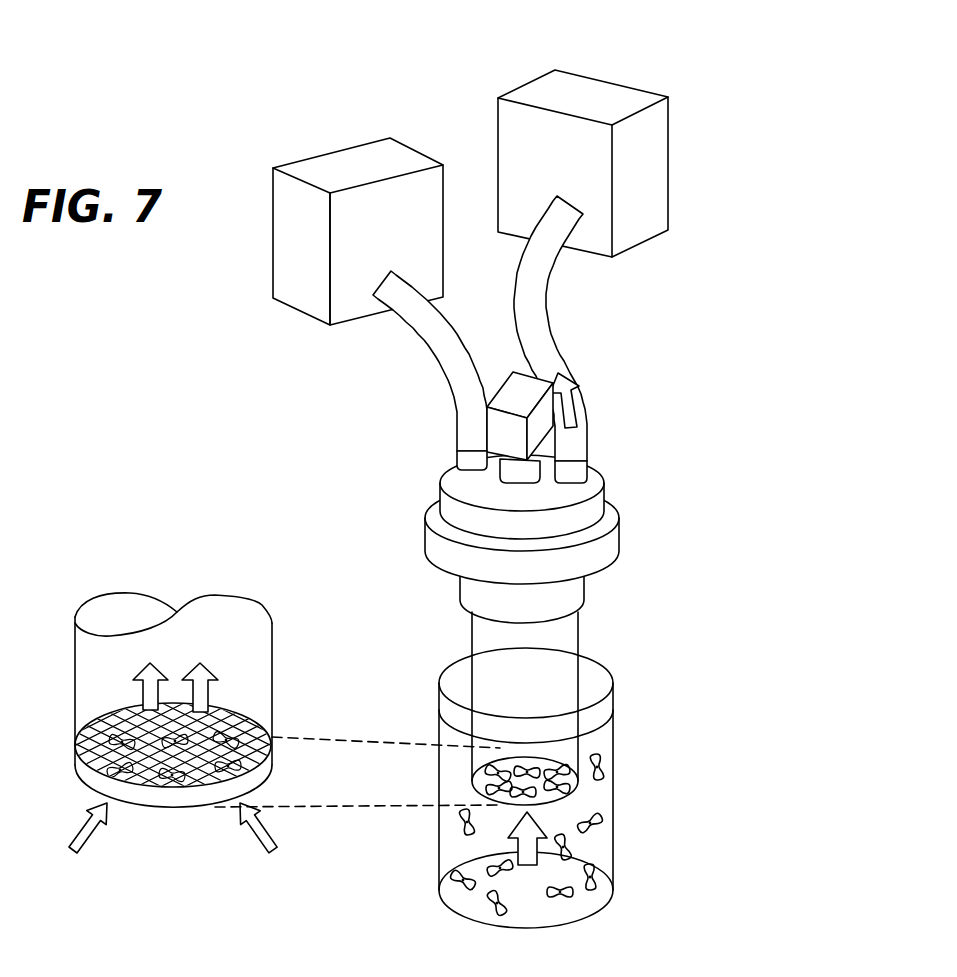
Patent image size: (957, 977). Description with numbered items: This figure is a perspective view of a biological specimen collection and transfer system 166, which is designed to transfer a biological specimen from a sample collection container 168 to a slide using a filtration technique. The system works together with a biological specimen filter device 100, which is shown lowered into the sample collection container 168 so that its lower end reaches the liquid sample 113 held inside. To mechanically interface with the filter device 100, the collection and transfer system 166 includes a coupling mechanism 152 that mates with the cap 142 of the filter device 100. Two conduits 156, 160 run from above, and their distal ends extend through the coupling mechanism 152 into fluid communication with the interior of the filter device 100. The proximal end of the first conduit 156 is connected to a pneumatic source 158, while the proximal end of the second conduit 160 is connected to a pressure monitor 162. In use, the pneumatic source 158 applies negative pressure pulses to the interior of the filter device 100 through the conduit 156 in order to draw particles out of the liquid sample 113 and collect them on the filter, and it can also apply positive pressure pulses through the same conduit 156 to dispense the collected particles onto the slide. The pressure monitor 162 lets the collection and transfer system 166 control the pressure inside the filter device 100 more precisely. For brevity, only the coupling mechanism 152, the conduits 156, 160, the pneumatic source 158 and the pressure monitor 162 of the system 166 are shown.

The biological specimen filter device 100 is at (630, 625).
The liquid sample 113 is at (580, 805).
The cap 142 is at (603, 537).
The coupling mechanism 152 is at (592, 450).
The conduit 156 is at (547, 345).
The pneumatic source 158 is at (600, 97).
The conduit 160 is at (460, 385).
The pressure monitor 162 is at (330, 170).
The biological specimen collection and transfer system 166 is at (762, 212).
The sample collection container 168 is at (613, 728).